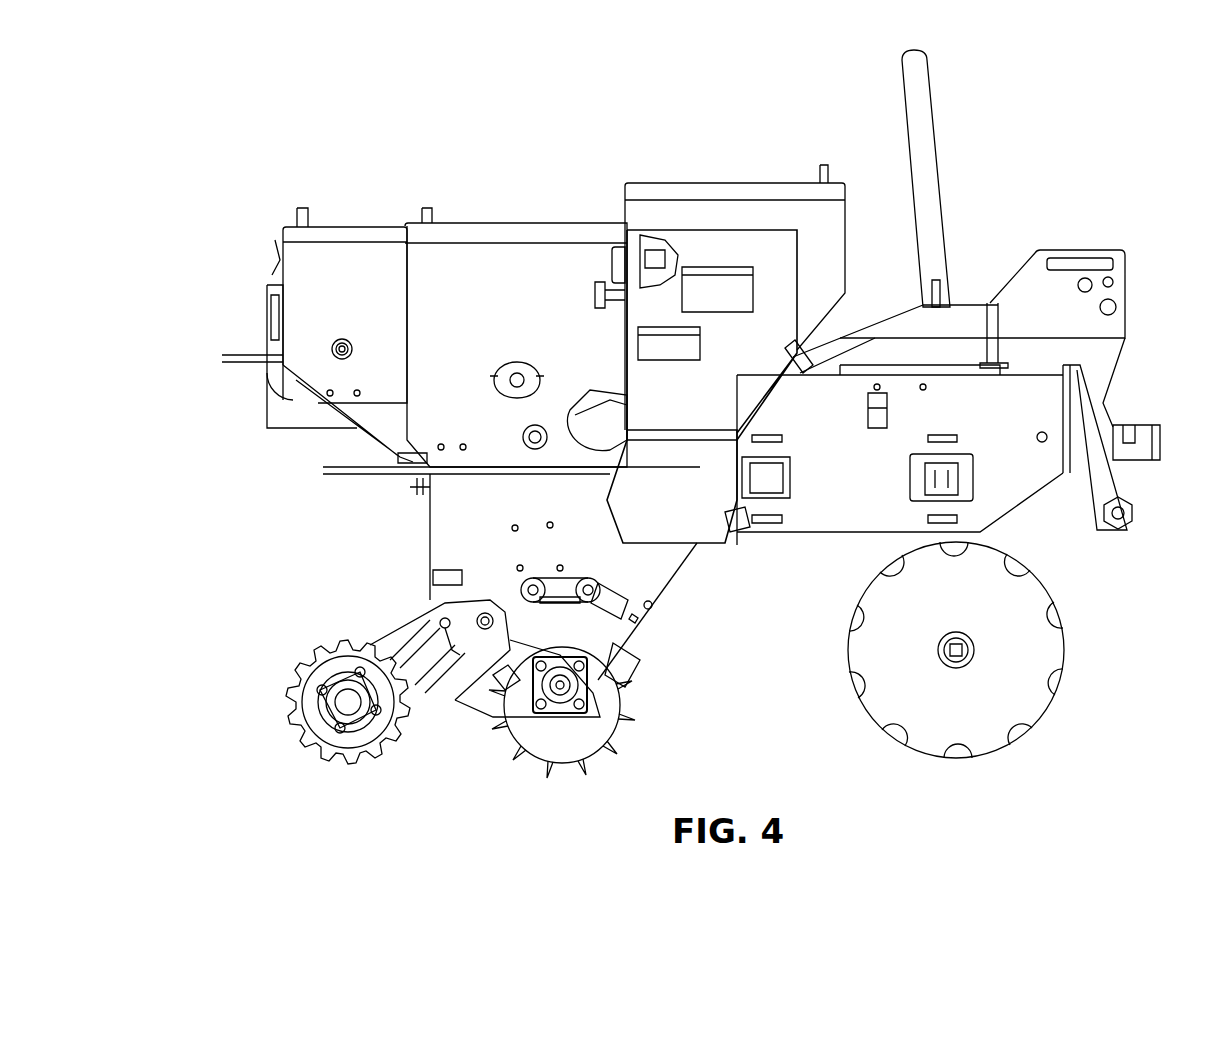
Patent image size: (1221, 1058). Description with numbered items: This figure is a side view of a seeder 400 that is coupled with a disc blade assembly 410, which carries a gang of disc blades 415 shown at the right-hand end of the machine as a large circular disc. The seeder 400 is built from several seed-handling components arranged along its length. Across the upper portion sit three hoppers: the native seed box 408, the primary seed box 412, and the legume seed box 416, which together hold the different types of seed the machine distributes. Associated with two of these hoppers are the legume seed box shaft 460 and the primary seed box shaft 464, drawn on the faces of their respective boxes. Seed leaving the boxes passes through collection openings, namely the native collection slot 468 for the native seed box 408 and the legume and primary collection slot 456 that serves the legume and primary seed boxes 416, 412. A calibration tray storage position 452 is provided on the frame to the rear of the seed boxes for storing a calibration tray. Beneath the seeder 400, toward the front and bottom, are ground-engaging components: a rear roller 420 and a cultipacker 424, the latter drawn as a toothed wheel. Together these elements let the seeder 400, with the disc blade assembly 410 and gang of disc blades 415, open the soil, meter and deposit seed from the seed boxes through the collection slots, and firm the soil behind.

The seeder 400 is at (618, 98).
The native seed box 408 is at (710, 215).
The disc blade assembly 410 is at (1093, 732).
The primary seed box 412 is at (430, 363).
The gang of disc blades 415 is at (940, 728).
The legume seed box 416 is at (300, 367).
The rear roller 420 is at (547, 723).
The cultipacker 424 is at (333, 737).
The calibration tray storage position 452 is at (870, 415).
The legume and primary collection slot 456 is at (560, 585).
The legume seed box shaft 460 is at (339, 348).
The primary seed box shaft 464 is at (535, 437).
The native collection slot 468 is at (623, 600).